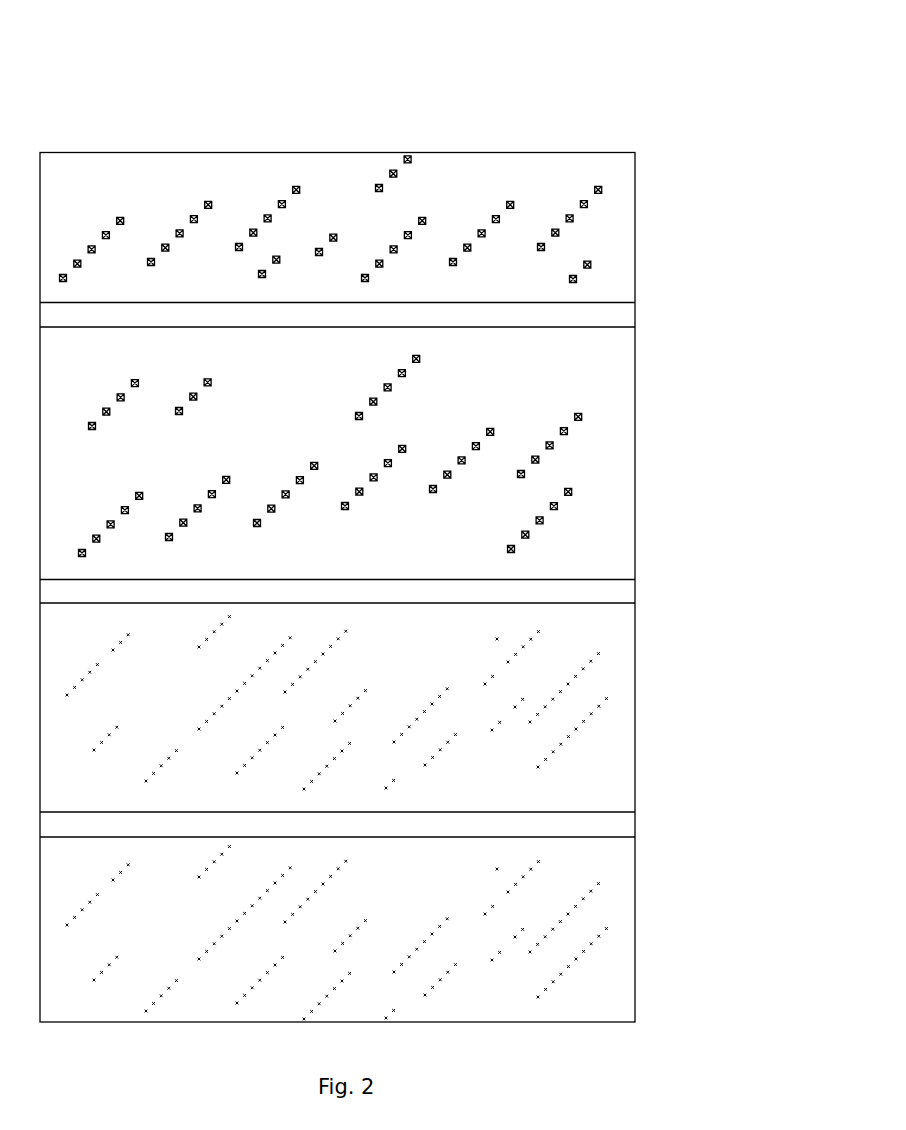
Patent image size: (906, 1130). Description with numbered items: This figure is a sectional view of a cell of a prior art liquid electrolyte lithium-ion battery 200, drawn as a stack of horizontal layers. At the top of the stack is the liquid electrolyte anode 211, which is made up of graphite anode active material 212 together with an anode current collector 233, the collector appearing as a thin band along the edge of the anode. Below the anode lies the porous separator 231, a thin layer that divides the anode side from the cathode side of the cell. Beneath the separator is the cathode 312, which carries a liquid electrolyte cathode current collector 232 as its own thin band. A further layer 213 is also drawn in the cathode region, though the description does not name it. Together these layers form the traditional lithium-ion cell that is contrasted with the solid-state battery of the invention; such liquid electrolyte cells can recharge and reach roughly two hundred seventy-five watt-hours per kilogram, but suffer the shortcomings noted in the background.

The liquid electrolyte lithium-ion battery 200 is at (325, 122).
The anode current collector 233 is at (635, 313).
The graphite anode active material 212 is at (610, 417).
The liquid electrolyte anode 211 is at (405, 467).
The porous separator 231 is at (635, 585).
The cathode 312 is at (635, 684).
The second layer 213 is at (407, 713).
The liquid electrolyte cathode current collector 232 is at (635, 827).